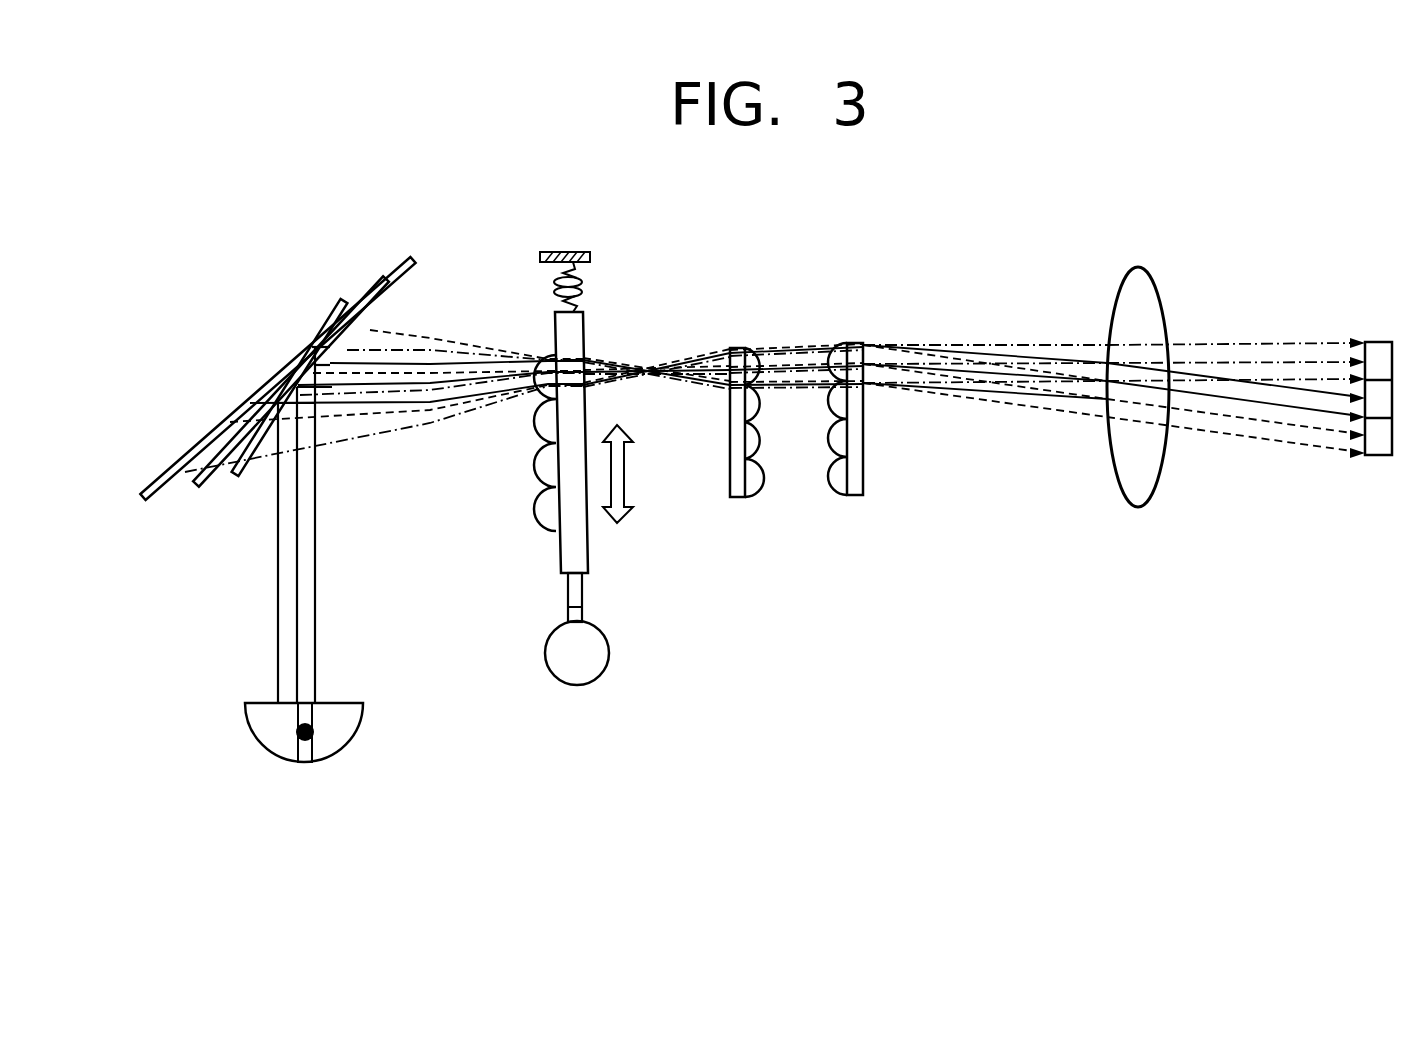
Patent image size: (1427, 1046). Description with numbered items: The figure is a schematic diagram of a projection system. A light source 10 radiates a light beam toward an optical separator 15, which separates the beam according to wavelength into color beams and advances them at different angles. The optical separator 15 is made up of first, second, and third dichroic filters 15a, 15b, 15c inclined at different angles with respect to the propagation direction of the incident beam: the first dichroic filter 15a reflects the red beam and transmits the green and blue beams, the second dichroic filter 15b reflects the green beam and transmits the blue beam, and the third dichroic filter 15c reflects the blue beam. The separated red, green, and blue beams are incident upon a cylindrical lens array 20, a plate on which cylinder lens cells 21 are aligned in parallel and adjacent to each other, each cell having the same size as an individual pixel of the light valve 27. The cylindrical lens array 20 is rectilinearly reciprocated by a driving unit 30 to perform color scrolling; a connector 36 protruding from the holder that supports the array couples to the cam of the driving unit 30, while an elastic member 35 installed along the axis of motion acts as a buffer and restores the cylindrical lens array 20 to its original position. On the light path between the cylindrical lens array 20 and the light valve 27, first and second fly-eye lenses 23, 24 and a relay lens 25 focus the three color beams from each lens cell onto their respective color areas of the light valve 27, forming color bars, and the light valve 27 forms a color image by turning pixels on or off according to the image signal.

The light source 10 is at (305, 765).
The optical separator 15 is at (269, 480).
The first dichroic filter 15a is at (286, 432).
The second dichroic filter 15b is at (197, 488).
The third dichroic filter 15c is at (145, 500).
The cylindrical lens array 20 is at (587, 558).
The cylinder lens cells 21 is at (545, 462).
The first fly-eye lens 23 is at (740, 500).
The second fly-eye lens 24 is at (855, 500).
The relay lens 25 is at (1136, 265).
The light valve 27 is at (1383, 312).
The driving unit 30 is at (530, 690).
The elastic member 35 is at (585, 286).
The connector 36 is at (568, 594).